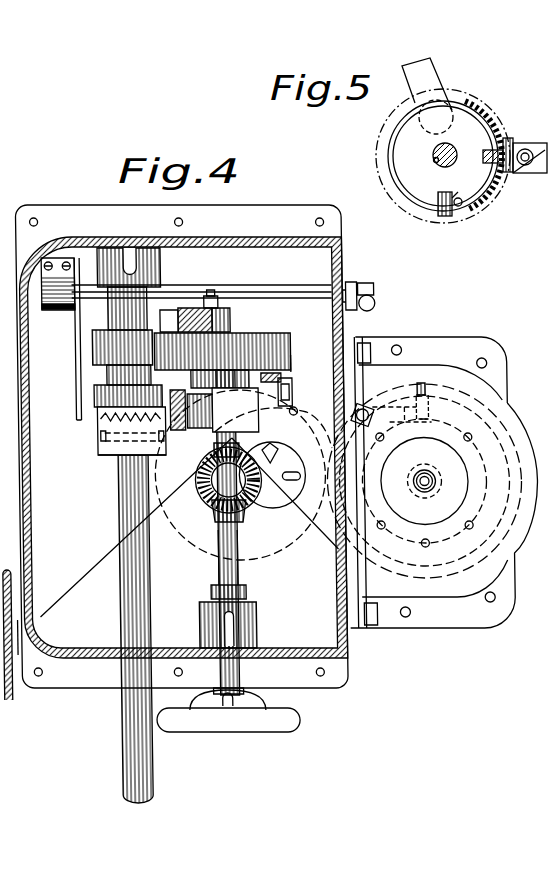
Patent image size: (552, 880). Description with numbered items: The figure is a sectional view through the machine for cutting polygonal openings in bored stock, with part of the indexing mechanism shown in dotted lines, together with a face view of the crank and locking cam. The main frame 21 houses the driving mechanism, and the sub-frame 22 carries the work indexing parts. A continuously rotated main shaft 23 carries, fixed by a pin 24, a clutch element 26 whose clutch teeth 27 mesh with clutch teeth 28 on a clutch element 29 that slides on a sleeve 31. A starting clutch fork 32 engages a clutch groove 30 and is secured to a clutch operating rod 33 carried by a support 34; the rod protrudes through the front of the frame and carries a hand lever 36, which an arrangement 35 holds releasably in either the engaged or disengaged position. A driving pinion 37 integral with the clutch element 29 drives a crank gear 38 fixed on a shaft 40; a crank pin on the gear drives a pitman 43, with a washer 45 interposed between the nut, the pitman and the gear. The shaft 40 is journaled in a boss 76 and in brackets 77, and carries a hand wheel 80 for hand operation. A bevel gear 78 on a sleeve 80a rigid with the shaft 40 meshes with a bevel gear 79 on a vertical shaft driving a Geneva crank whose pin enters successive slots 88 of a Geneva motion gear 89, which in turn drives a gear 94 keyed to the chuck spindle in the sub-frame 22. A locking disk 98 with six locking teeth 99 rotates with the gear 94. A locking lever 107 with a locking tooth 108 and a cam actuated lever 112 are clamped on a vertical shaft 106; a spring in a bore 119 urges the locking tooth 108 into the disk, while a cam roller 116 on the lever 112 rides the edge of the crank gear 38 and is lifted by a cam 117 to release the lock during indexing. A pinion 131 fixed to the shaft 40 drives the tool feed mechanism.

In FIG. 4, the main frame 21 is at (290, 237).
In FIG. 4, the sub-frame 22 is at (442, 482).
In FIG. 4, the main shaft 23 is at (128, 483).
In FIG. 4, the pin 24 is at (98, 444).
In FIG. 4, the clutch element 26 is at (99, 452).
In FIG. 4, the clutch teeth 27 is at (101, 433).
In FIG. 4, the clutch teeth 28 is at (99, 416).
In FIG. 4, the clutch element 29 is at (105, 388).
In FIG. 4, the clutch groove 30 is at (92, 402).
In FIG. 4, the sleeve 31 is at (120, 297).
In FIG. 4, the starting clutch fork 32 is at (80, 355).
In FIG. 4, the clutch operating rod 33 is at (291, 292).
In FIG. 4, the support 34 is at (56, 299).
In FIG. 4, the arrangement 35 is at (353, 281).
In FIG. 4, the hand lever 36 is at (374, 284).
In FIG. 4, the driving pinion 37 is at (105, 343).
In FIG. 4, the crank gear 38 is at (283, 326).
In FIG. 5, the crank gear 38 is at (483, 108).
In FIG. 4, the shaft 40 is at (216, 500).
In FIG. 5, the shaft 40 is at (451, 153).
In FIG. 4, the pitman 43 is at (186, 316).
In FIG. 5, the pitman 43 is at (438, 78).
In FIG. 4, the washer 45 is at (222, 302).
In FIG. 4, the boss 76 is at (254, 626).
In FIG. 4, the brackets 77 is at (214, 410).
In FIG. 4, the bevel gear 78 is at (214, 514).
In FIG. 4, the bevel gear 79 is at (196, 478).
In FIG. 4, the hand wheel 80 is at (295, 718).
In FIG. 4, the sleeve 80a is at (217, 556).
In FIG. 4, the slots 88 is at (283, 458).
In FIG. 4, the Geneva motion gear 89 is at (318, 540).
In FIG. 4, the gear 94 is at (400, 563).
In FIG. 4, the locking disk 98 is at (444, 528).
In FIG. 4, the locking slots or teeth 99 is at (464, 509).
In FIG. 4, the vertical shaft 106 is at (366, 400).
In FIG. 4, the locking lever 107 is at (372, 425).
In FIG. 4, the locking tooth 108 is at (430, 420).
In FIG. 4, the cam actuated lever 112 is at (293, 393).
In FIG. 5, the cam actuated lever 112 is at (533, 173).
In FIG. 4, the cam roller 116 is at (282, 376).
In FIG. 5, the cam roller 116 is at (515, 140).
In FIG. 4, the cam 117 is at (292, 358).
In FIG. 5, the cam 117 is at (473, 198).
In FIG. 4, the bore 119 is at (440, 372).
In FIG. 4, the pinion 131 is at (244, 590).